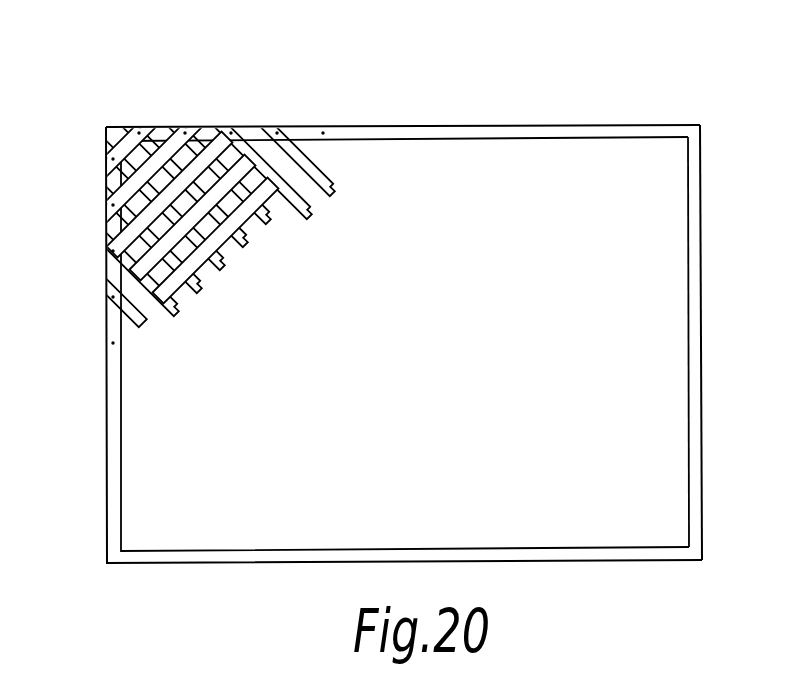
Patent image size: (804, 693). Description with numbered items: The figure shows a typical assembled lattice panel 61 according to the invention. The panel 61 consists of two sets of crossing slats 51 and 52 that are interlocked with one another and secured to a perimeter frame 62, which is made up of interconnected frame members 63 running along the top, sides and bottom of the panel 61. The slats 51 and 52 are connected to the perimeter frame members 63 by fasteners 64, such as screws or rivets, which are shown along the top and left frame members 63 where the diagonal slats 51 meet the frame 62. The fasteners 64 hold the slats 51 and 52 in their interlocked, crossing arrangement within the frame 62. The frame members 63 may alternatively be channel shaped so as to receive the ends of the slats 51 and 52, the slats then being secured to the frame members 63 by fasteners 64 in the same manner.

The assembled panel 61 is at (382, 281).
The perimeter frame 62 is at (465, 123).
The frame member 63 is at (670, 128).
The fastener 64 is at (147, 172).
The slat 51 is at (217, 237).
The slat 52 is at (335, 197).